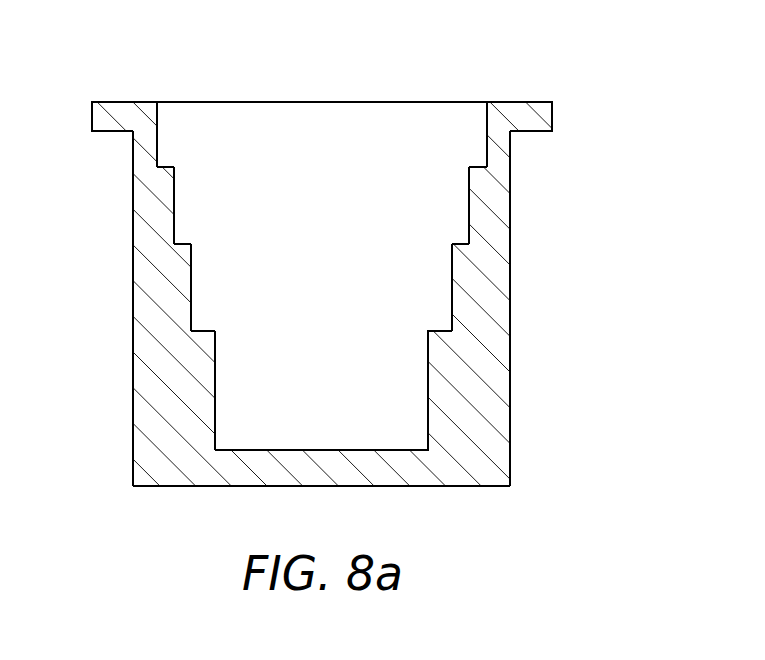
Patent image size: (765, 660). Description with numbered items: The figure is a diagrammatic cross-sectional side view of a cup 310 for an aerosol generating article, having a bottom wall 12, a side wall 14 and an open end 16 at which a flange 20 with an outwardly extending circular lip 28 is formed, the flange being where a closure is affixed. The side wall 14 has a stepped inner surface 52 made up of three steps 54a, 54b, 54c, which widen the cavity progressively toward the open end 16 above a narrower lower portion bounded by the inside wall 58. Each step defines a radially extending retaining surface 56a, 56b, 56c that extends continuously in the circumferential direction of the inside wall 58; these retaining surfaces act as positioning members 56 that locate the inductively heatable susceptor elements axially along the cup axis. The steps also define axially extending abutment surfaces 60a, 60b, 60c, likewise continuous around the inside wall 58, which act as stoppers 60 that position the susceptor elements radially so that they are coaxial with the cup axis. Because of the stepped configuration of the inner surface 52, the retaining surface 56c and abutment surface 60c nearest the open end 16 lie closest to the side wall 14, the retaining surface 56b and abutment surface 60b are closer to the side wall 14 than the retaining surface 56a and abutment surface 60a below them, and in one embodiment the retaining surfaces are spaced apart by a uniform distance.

The cup 310 is at (555, 197).
The bottom wall 12 is at (172, 487).
The side wall 14 is at (503, 278).
The open end 16 is at (320, 87).
The flange 20 is at (322, 90).
The circular lip 28 is at (522, 110).
The stepped inner surface 52 is at (333, 390).
The inside wall 58 is at (216, 387).
The step 54a is at (167, 310).
The step 54b is at (158, 223).
The step 54c is at (152, 132).
The positioning members 56 is at (486, 166).
The retaining surface 56a is at (206, 327).
The retaining surface 56b is at (187, 240).
The retaining surface 56c is at (171, 165).
The stoppers 60 is at (487, 122).
The abutment surface 60a is at (196, 256).
The abutment surface 60b is at (178, 179).
The abutment surface 60c is at (160, 122).